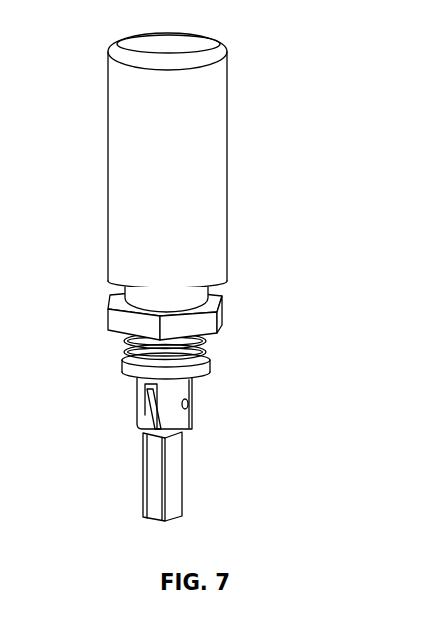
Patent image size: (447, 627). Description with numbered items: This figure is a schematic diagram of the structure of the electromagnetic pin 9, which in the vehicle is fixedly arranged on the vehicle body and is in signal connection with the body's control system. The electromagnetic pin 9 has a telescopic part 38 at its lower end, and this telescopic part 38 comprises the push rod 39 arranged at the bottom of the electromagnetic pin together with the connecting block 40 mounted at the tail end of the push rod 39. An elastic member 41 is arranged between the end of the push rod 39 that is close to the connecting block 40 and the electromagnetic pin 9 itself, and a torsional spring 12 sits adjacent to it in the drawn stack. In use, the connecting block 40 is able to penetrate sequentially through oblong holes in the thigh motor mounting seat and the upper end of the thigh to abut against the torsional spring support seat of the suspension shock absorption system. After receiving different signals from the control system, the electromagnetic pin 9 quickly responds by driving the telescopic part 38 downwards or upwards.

The electromagnetic pin 9 is at (217, 212).
The elastic member 41 is at (207, 348).
The torsional spring 12 is at (207, 372).
The push rod 39 is at (173, 412).
The connecting block 40 is at (173, 468).
The telescopic part of the electromagnetic pin 38 is at (212, 437).